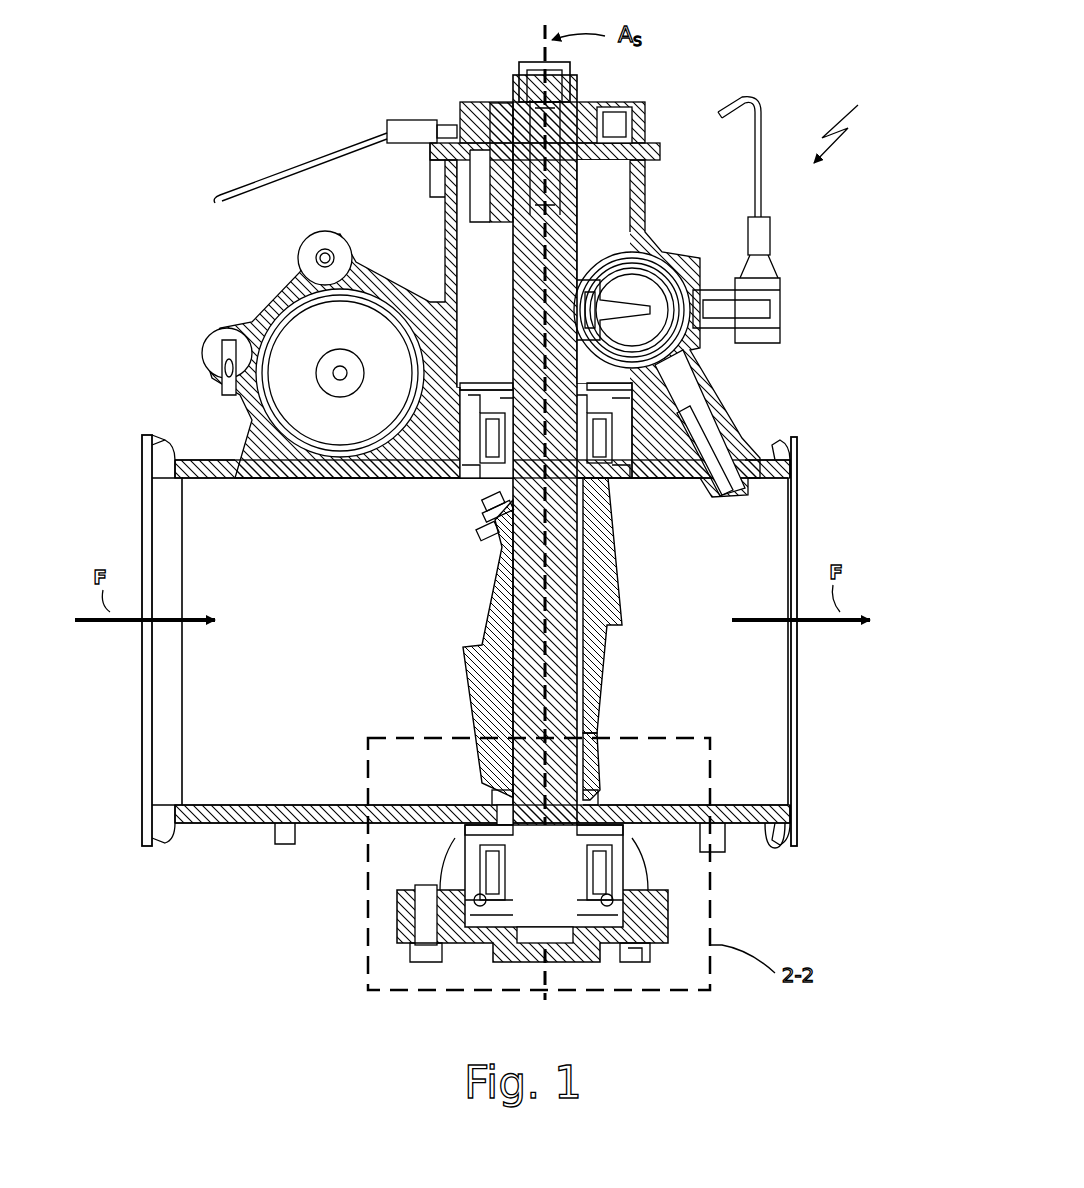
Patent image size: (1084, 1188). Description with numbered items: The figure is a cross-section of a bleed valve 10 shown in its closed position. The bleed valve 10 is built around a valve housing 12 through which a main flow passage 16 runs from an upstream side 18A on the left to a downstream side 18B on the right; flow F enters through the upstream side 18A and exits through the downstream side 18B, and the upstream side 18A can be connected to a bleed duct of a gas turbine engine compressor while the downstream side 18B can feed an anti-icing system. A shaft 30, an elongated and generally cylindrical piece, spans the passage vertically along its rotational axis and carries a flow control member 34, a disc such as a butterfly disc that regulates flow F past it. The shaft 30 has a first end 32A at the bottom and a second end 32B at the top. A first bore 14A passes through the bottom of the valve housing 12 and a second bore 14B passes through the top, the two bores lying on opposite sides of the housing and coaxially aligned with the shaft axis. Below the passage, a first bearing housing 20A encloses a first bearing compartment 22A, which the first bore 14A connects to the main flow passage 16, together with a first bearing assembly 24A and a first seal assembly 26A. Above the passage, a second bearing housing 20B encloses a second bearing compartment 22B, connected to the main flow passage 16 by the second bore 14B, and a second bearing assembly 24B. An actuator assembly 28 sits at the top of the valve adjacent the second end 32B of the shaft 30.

The bleed valve 10 is at (554, 132).
The valve housing 12 is at (232, 823).
The first bore 14A is at (598, 800).
The second bore 14B is at (590, 485).
The main flow passage 16 is at (265, 574).
The upstream side 18A is at (142, 432).
The downstream side 18B is at (797, 435).
The first bearing housing 20A is at (633, 878).
The second bearing housing 20B is at (600, 472).
The first bearing compartment 22A is at (628, 860).
The second bearing compartment 22B is at (470, 400).
The first bearing assembly 24A is at (488, 868).
The second bearing assembly 24B is at (478, 447).
The first seal assembly 26A is at (500, 803).
The actuator assembly 28 is at (672, 236).
The shaft 30 is at (505, 592).
The first end 32A is at (497, 815).
The second end 32B is at (510, 232).
The flow control member 34 is at (478, 630).